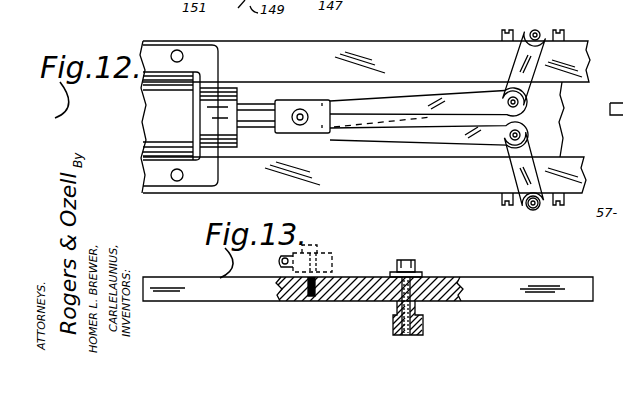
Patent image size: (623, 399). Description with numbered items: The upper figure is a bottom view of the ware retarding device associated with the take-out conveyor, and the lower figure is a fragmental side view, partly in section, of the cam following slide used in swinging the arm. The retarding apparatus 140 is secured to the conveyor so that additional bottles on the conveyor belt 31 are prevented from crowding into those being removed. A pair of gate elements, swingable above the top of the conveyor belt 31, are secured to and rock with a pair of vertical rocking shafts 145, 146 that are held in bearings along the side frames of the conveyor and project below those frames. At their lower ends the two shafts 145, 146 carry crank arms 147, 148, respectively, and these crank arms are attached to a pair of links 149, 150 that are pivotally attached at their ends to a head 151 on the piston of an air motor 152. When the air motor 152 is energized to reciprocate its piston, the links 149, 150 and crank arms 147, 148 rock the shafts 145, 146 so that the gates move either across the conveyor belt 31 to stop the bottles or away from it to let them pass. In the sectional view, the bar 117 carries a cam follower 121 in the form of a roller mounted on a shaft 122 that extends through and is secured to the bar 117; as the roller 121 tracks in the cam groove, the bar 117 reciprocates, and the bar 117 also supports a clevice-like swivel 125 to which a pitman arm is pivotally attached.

In FIG. 12, the conveyor belt 31 is at (542, 106).
In FIG. 13, the bar 117 is at (511, 294).
In FIG. 13, the cam follower 121 is at (426, 323).
In FIG. 13, the shaft 122 is at (400, 278).
In FIG. 13, the clevice-like swivel 125 is at (326, 244).
In FIG. 12, the retarding apparatus 140 is at (136, 43).
In FIG. 12, the vertical rocking shaft 145 is at (534, 216).
In FIG. 12, the vertical rocking shaft 146 is at (537, 33).
In FIG. 12, the crank arm 147 is at (522, 155).
In FIG. 12, the crank arm 148 is at (553, 63).
In FIG. 12, the link 149 is at (440, 135).
In FIG. 12, the link 150 is at (460, 102).
In FIG. 12, the head 151 is at (289, 103).
In FIG. 12, the air motor 152 is at (163, 106).